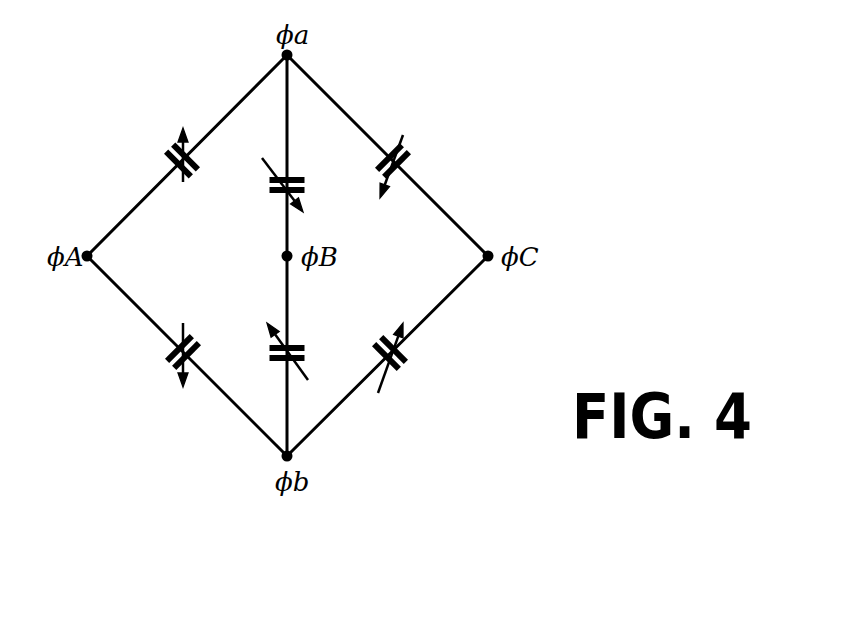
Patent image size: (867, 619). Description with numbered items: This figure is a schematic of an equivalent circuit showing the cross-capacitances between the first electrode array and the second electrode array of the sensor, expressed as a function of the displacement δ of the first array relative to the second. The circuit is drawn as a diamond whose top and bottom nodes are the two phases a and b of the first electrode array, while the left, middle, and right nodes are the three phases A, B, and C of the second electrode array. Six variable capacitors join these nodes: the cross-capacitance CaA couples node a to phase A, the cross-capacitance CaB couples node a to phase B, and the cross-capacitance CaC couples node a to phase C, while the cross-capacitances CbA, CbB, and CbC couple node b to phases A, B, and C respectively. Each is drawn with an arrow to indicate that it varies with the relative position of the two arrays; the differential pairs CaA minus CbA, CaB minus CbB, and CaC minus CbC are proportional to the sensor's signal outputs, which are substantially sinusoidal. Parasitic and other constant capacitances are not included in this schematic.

The cross-capacitance CaA(δ) CaA is at (149, 155).
The cross-capacitance CaB(δ) CaB is at (319, 190).
The cross-capacitance CaC(δ) CaC is at (429, 166).
The cross-capacitance CbA(δ) CbA is at (145, 355).
The cross-capacitance CbB(δ) CbB is at (315, 342).
The cross-capacitance CbC(δ) CbC is at (426, 358).